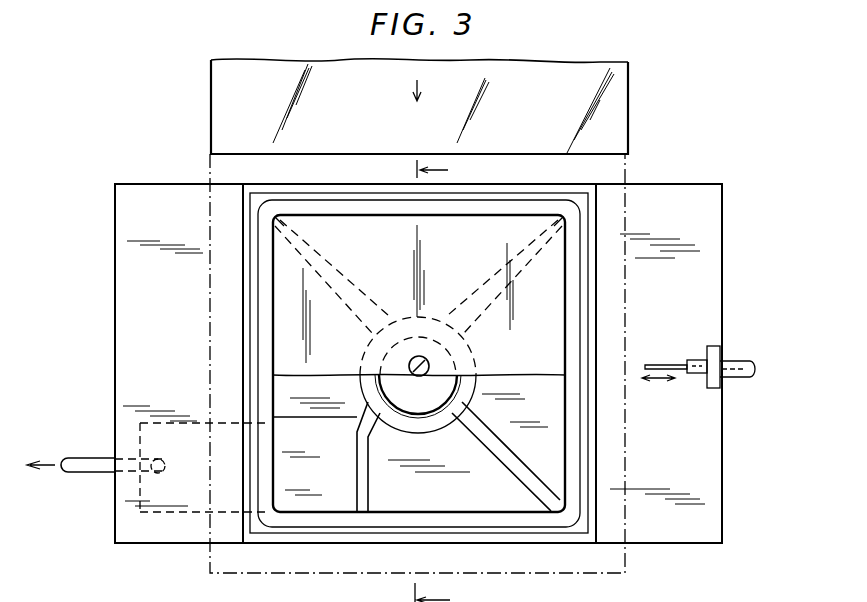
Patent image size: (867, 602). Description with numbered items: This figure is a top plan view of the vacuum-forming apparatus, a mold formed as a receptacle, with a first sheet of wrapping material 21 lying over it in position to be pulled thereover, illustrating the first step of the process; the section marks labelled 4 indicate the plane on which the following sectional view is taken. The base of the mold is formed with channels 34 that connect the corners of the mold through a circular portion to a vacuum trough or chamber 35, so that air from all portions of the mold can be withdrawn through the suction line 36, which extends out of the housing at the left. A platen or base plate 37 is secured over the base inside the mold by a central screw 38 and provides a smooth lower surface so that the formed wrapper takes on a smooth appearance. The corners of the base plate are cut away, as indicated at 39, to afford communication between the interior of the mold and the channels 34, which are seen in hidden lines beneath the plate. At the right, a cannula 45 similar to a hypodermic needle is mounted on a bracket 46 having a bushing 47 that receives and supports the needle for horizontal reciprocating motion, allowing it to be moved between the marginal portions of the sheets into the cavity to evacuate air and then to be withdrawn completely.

The first sheet of wrapping material 21 is at (228, 96).
The section line 4- 4 is at (440, 381).
The channels 34 is at (498, 272).
The vacuum trough 35 is at (318, 486).
The suction line 36 is at (91, 438).
The platen 37 is at (385, 257).
The screw 38 is at (431, 347).
The cut-away corners 39 is at (283, 223).
The cannula 45 is at (660, 365).
The bracket 46 is at (717, 352).
The bushing 47 is at (740, 378).